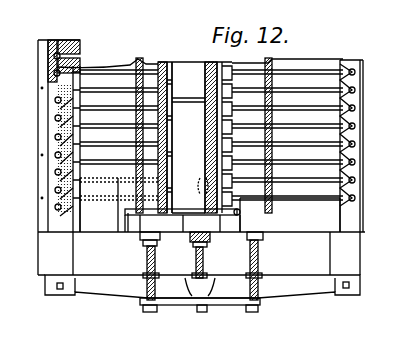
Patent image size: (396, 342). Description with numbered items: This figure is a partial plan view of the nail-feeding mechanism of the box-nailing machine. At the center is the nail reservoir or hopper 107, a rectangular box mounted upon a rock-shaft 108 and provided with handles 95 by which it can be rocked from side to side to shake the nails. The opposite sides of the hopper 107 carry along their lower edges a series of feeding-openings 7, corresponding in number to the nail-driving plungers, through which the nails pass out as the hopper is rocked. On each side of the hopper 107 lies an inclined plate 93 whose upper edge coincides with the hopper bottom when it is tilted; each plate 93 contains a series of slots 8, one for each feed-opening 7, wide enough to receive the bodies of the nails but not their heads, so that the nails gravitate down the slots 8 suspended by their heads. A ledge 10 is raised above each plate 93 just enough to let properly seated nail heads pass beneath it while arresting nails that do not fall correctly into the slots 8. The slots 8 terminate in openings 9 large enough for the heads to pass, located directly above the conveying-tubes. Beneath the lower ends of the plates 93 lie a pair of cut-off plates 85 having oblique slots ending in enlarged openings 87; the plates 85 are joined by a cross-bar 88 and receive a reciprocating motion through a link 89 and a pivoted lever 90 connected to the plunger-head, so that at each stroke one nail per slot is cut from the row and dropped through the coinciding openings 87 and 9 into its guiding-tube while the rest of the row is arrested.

The openings 9 is at (54, 57).
The enlarged openings 87 is at (55, 136).
The slots 8 is at (208, 135).
The ledge 10 is at (139, 62).
The feeding-openings 7 is at (168, 70).
The hopper 107 is at (188, 93).
The pivoted lever 90 is at (199, 186).
The handles 95 is at (152, 212).
The inclined plates 93 is at (210, 205).
The rock-shaft 108 is at (210, 240).
The link 89 is at (204, 262).
The cross-bar 88 is at (290, 282).
The cut-off plates 85 is at (199, 253).